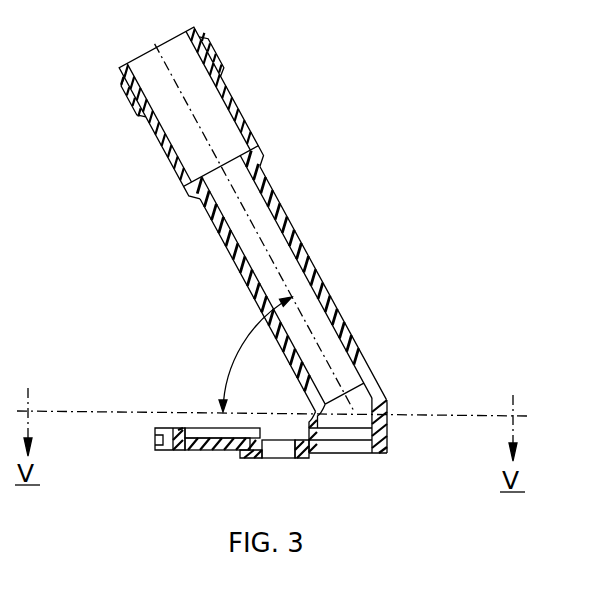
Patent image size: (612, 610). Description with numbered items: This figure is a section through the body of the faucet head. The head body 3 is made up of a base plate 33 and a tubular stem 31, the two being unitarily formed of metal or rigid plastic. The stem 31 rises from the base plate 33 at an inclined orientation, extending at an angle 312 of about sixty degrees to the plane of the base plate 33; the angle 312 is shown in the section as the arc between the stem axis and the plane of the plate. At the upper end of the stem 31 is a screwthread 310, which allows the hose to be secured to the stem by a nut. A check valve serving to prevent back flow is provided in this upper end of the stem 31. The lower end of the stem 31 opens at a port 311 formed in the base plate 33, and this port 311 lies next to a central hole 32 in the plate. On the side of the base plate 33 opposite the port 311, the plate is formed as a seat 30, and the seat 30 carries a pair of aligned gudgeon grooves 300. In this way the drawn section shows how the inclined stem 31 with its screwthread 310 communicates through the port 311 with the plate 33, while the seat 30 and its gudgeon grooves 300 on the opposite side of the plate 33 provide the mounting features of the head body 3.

The head body 3 is at (181, 411).
The seat 30 is at (163, 453).
The gudgeon grooves 300 is at (153, 440).
The tubular stem 31 is at (285, 216).
The screwthread 310 is at (226, 62).
The port 311 is at (368, 453).
The angle 312 is at (242, 338).
The central hole 32 is at (272, 450).
The base plate 33 is at (305, 453).